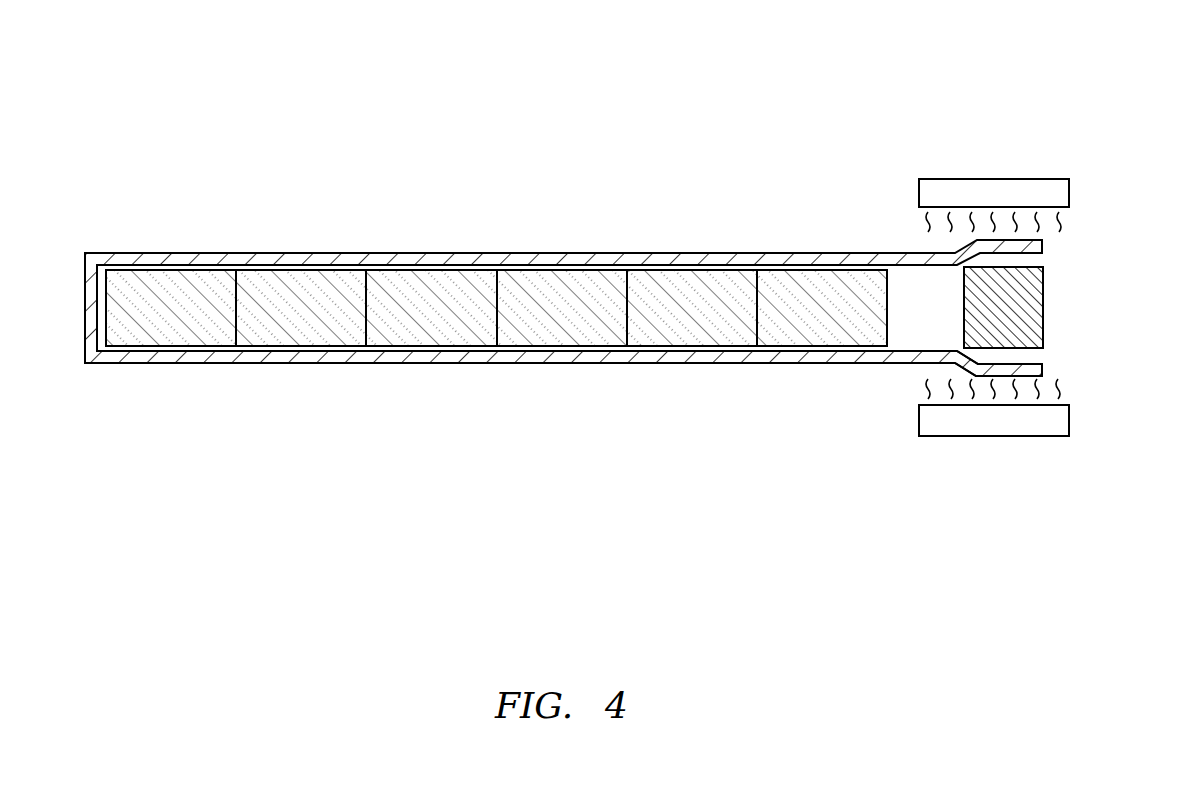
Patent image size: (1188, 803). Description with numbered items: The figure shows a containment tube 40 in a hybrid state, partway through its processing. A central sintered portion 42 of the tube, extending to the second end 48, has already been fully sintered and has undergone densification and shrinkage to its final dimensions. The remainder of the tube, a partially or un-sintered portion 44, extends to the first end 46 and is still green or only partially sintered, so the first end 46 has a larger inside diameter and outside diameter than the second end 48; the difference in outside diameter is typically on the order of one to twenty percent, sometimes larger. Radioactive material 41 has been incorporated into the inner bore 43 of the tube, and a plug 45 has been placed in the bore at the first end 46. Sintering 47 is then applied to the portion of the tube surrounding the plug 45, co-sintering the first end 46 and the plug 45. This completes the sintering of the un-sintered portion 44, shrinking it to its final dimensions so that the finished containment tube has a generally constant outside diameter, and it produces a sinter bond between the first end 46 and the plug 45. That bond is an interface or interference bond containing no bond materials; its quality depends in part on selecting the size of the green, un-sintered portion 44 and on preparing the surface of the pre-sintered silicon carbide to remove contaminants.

The containment tube 40 is at (788, 73).
The radioactive material 41 is at (182, 282).
The sintered portion 42 is at (85, 490).
The inner bore 43 is at (917, 320).
The partially or un-sintered portion 44 is at (948, 490).
The plug 45 is at (1047, 307).
The first end 46 is at (1048, 362).
The sintering 47 is at (1078, 220).
The second end 48 is at (78, 377).